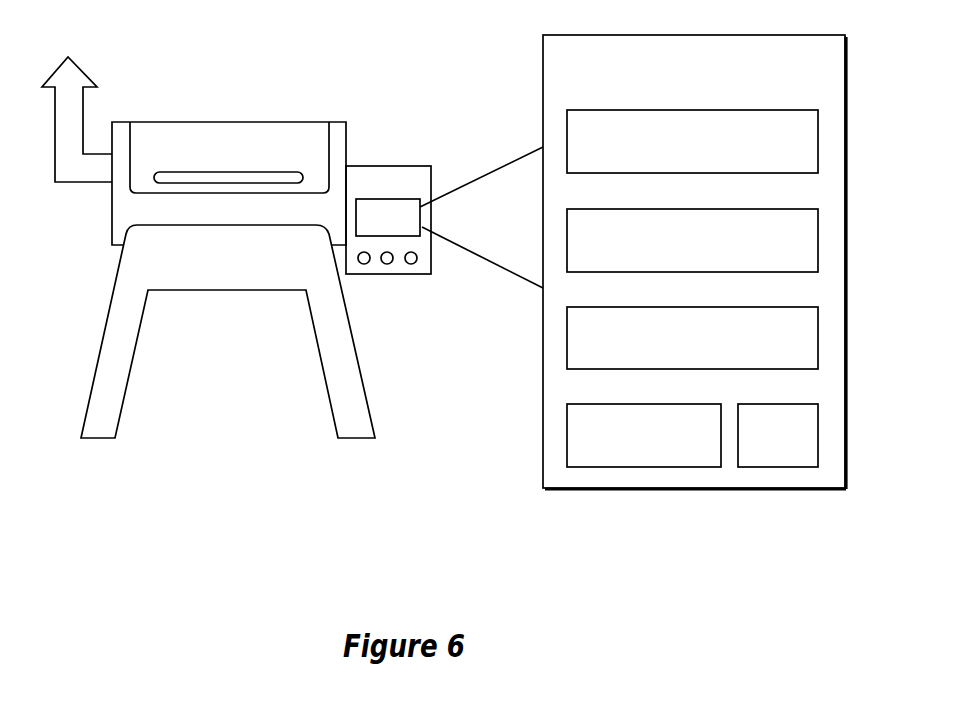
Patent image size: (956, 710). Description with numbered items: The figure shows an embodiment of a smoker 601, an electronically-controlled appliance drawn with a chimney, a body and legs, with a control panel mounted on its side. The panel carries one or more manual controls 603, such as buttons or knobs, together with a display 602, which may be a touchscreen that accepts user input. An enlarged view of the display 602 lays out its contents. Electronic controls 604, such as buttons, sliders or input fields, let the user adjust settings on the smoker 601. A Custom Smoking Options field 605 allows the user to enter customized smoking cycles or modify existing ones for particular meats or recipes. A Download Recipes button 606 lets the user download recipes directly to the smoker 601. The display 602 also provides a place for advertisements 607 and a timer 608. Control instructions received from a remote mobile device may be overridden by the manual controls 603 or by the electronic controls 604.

The smoker 601 is at (232, 121).
The display 602 is at (385, 207).
The manual controls 603 is at (388, 267).
The electronic controls 604 is at (762, 109).
The Custom Smoking Options field 605 is at (762, 208).
The Download Recipes button 606 is at (762, 306).
The advertisements 607 is at (655, 403).
The timer 608 is at (762, 403).